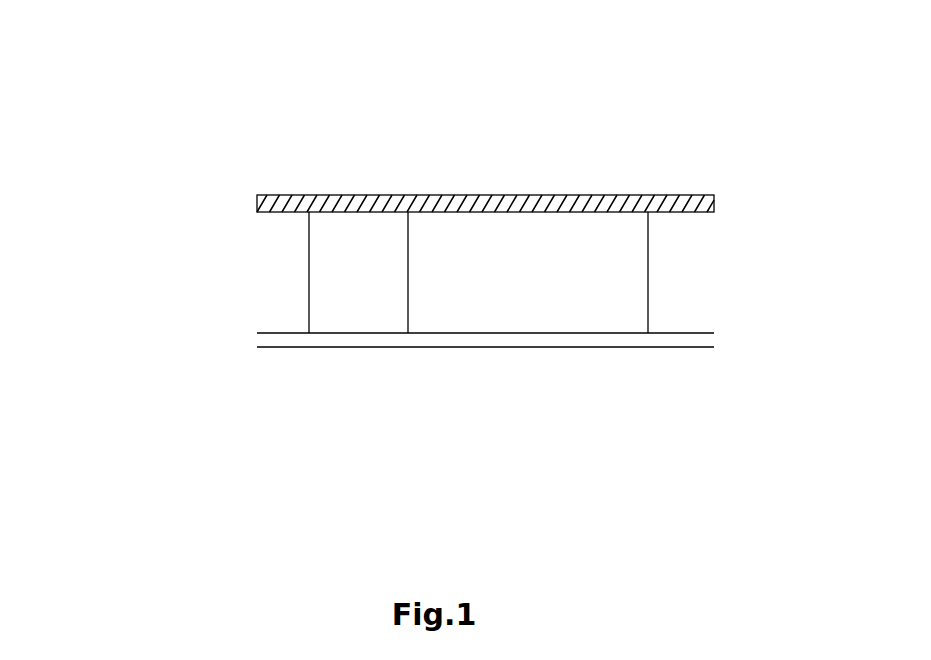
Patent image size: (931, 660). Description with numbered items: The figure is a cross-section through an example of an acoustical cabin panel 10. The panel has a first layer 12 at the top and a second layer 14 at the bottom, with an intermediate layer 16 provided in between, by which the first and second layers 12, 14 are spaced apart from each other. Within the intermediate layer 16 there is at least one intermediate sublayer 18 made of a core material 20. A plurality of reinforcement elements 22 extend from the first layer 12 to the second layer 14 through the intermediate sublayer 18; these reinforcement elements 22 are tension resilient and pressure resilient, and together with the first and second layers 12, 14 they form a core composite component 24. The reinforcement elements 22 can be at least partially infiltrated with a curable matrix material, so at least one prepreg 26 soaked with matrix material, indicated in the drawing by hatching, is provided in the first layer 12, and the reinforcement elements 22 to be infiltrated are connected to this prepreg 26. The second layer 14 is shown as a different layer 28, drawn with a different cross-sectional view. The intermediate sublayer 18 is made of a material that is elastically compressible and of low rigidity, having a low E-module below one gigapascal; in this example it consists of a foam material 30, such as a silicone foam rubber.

The acoustical cabin panel 10 is at (747, 104).
The first layer 12 is at (226, 193).
The second layer 14 is at (240, 349).
The intermediate layer 16 is at (213, 212).
The intermediate sublayer 18 is at (710, 262).
The core material 20 is at (541, 232).
The reinforcement elements 22 is at (648, 288).
The core composite component 24 is at (90, 196).
The prepreg 26 is at (478, 196).
The different layer 28 is at (485, 336).
The foam material 30 is at (452, 300).